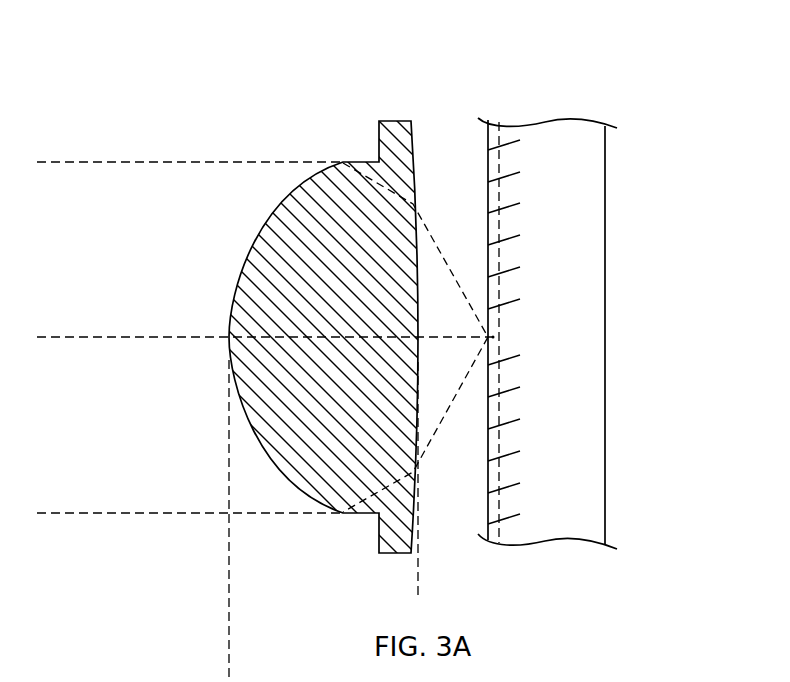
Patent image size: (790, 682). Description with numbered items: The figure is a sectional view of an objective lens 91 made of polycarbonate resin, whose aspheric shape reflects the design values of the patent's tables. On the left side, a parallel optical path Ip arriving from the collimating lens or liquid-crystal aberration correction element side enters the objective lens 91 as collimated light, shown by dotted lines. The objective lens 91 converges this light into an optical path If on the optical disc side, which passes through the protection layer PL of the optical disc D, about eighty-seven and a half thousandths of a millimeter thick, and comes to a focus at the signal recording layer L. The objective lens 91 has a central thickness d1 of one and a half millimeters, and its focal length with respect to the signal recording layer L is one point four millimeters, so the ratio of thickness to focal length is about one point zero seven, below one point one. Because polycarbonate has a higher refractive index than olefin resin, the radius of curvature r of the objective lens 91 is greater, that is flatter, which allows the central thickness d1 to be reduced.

The objective lens 91 is at (358, 284).
The protection layer PL is at (492, 117).
The signal recording layer L is at (501, 117).
The optical disc D is at (614, 299).
The parallel optical path Ip is at (126, 158).
The optical path If is at (443, 224).
The radius of curvature r is at (325, 410).
The central thickness d1 is at (418, 588).